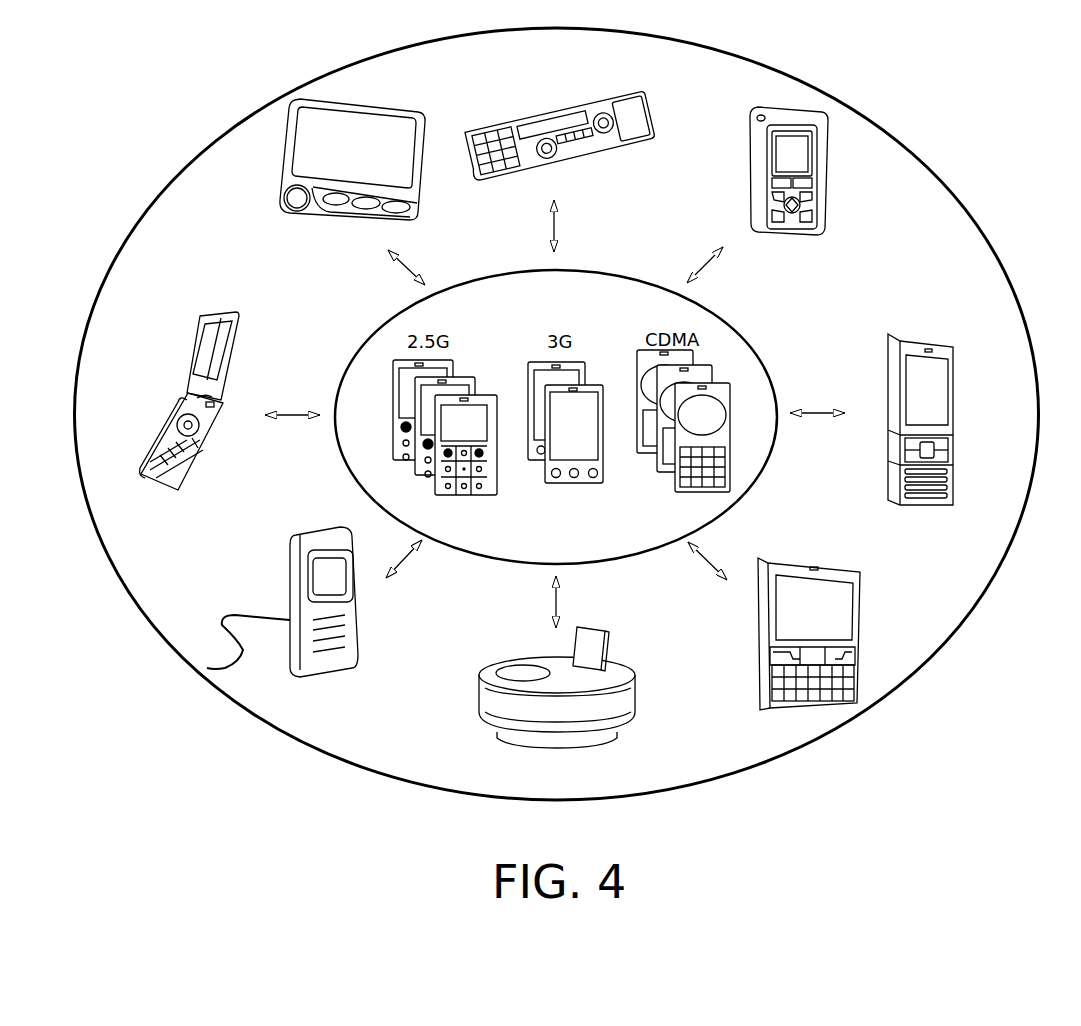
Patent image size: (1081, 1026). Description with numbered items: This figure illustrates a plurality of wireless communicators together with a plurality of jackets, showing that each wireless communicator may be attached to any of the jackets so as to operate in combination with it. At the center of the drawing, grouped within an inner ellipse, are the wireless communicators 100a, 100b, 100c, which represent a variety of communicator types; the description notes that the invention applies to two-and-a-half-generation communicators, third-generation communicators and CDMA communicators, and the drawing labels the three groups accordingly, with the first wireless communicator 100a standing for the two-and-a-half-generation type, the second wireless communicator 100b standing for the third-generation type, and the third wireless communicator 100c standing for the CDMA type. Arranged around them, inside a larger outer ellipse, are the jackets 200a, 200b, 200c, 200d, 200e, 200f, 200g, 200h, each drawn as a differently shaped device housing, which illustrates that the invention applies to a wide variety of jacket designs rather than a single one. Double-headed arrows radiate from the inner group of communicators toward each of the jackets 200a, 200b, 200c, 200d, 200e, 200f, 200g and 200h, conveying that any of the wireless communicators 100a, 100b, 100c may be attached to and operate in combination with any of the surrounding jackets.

The wireless communicator 100a is at (484, 498).
The wireless communicator 100b is at (563, 490).
The wireless communicator 100c is at (654, 476).
The jacket 200a is at (630, 141).
The jacket 200b is at (832, 207).
The jacket 200c is at (958, 402).
The jacket 200d is at (867, 593).
The jacket 200e is at (615, 647).
The jacket 200f is at (362, 609).
The jacket 200g is at (238, 353).
The jacket 200h is at (423, 207).